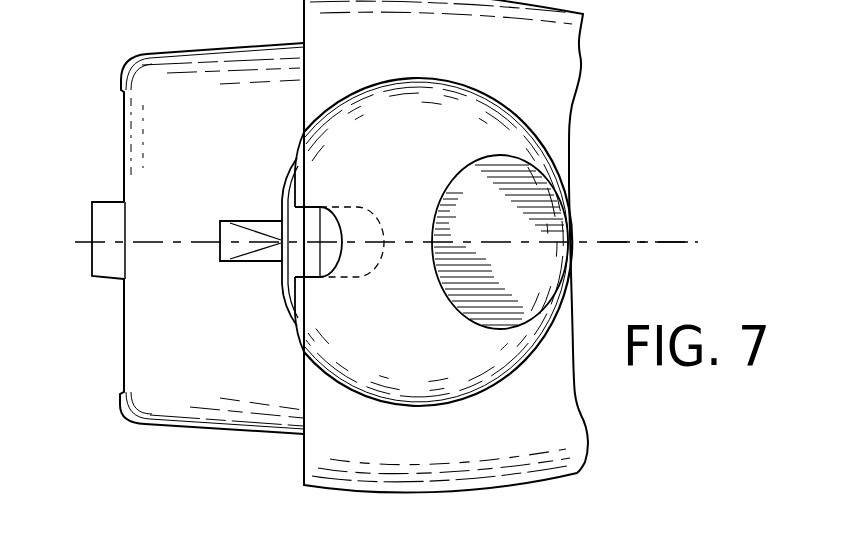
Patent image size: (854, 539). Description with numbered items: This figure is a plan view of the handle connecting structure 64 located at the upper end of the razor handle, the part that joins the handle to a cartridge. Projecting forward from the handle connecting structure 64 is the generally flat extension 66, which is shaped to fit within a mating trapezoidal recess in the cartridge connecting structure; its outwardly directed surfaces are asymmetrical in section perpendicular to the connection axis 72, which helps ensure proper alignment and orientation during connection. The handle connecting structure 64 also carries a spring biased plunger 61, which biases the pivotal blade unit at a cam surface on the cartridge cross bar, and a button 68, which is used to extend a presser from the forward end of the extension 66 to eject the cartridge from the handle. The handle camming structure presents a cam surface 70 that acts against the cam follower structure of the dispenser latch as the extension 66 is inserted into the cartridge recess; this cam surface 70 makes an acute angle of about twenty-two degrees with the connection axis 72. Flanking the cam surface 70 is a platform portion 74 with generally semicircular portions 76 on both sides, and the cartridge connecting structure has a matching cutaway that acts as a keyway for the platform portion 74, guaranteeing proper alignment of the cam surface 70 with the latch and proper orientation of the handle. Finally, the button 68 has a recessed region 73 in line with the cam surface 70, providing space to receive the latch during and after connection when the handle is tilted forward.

The spring biased plunger 61 is at (105, 202).
The handle connecting structure 64 is at (297, 513).
The extension 66 is at (198, 400).
The button 68 is at (457, 83).
The cam surface 70 is at (240, 250).
The connection axis 72 is at (642, 240).
The recessed region 73 is at (330, 227).
The platform portion 74 is at (283, 204).
The semicircular portions 76 is at (256, 236).